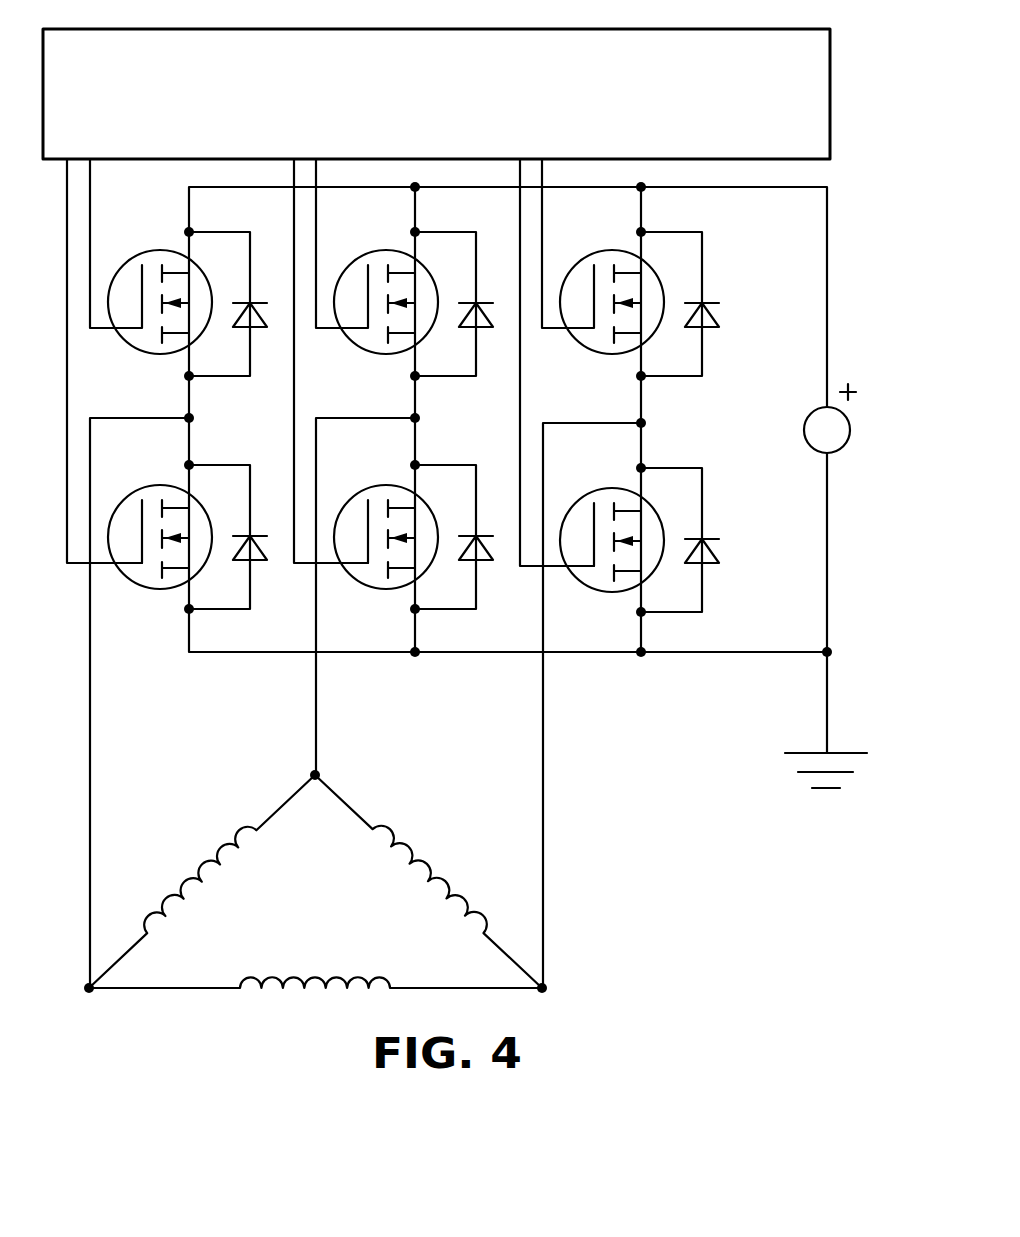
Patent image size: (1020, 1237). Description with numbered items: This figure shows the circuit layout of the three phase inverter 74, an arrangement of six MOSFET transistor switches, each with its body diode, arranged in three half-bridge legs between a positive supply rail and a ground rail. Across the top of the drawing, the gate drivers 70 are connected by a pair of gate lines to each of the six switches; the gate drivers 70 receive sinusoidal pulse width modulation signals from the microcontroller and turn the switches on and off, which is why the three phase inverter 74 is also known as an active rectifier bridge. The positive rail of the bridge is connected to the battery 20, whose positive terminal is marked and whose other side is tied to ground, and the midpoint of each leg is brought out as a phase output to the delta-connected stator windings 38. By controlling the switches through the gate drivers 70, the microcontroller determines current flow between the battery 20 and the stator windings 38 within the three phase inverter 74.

The battery 20 is at (810, 445).
The stator windings 38 is at (318, 975).
The gate drivers 70 is at (808, 108).
The three phase inverter 74 is at (647, 697).